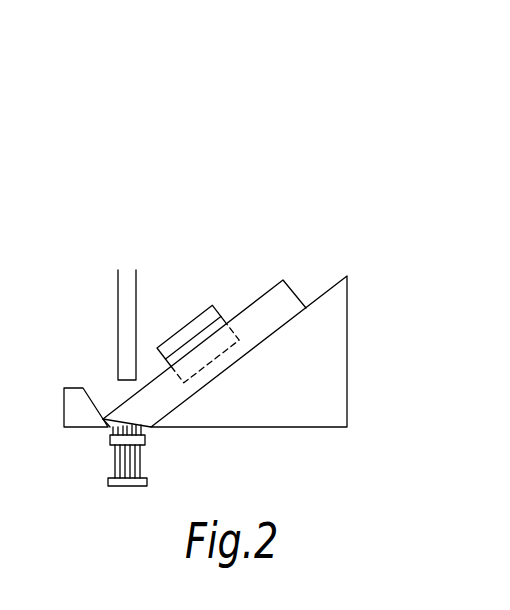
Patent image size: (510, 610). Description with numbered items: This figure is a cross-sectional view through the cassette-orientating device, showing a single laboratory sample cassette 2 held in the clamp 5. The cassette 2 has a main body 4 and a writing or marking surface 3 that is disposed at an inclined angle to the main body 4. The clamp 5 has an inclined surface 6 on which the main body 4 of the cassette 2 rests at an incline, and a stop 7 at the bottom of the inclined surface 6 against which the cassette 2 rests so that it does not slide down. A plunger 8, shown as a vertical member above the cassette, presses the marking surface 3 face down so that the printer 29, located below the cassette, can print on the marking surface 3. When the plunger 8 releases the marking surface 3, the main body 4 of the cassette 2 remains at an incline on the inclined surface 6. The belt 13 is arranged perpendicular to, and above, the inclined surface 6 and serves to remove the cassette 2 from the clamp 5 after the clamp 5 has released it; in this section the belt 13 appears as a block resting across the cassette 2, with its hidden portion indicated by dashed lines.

The laboratory sample cassette 2 is at (284, 268).
The marking surface 3 is at (108, 426).
The main body 4 is at (247, 309).
The clamp 5 is at (92, 376).
The inclined surface 6 is at (325, 292).
The stop 7 is at (64, 411).
The plunger 8 is at (118, 307).
The belt 13 is at (184, 326).
The printer 29 is at (140, 462).